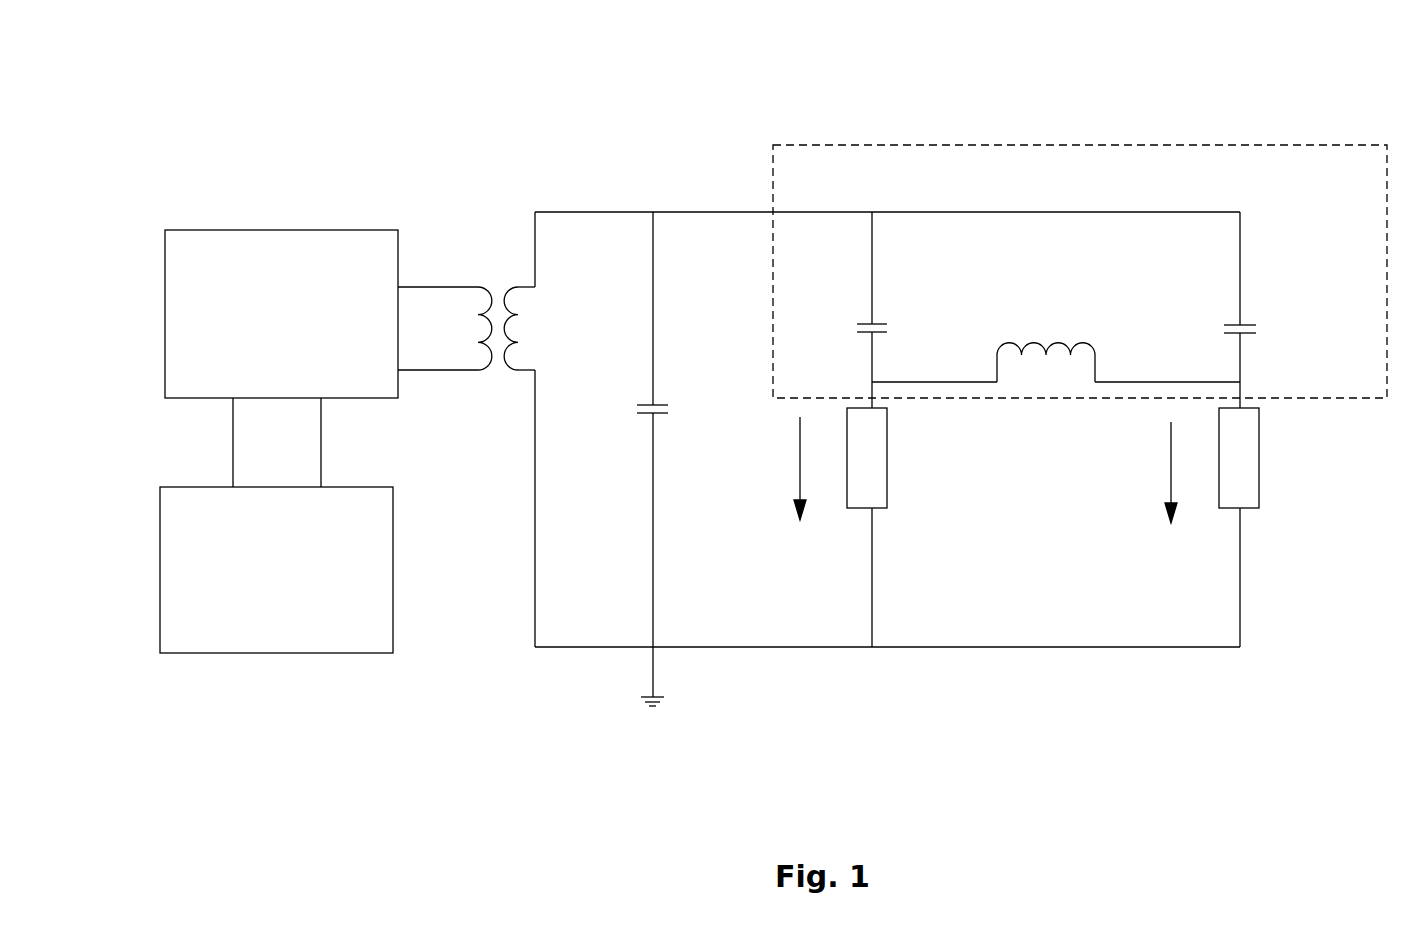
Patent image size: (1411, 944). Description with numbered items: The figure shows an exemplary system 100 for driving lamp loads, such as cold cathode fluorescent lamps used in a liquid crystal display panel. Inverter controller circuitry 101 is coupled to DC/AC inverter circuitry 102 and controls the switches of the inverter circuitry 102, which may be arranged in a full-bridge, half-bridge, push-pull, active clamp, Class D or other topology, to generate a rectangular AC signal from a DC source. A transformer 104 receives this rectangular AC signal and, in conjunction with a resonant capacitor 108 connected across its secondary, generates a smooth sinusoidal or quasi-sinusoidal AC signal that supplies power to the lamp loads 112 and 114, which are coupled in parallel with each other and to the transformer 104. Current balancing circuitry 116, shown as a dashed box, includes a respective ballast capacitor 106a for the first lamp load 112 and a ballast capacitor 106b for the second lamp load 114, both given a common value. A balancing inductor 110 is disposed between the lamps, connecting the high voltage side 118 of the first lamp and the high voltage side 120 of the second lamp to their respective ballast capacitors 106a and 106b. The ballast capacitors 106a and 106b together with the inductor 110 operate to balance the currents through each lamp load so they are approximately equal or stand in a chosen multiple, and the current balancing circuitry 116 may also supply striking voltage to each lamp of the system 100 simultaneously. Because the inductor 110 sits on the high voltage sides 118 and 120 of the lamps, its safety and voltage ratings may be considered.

The system 100 is at (715, 80).
The inverter controller circuitry 101 is at (350, 487).
The DC/AC inverter circuitry 102 is at (205, 230).
The transformer 104 is at (474, 213).
The ballast capacitor 106a is at (888, 318).
The ballast capacitor 106b is at (1255, 307).
The resonant capacitor 108 is at (658, 459).
The balancing inductor 110 is at (1056, 367).
The lamp load 112 is at (916, 527).
The lamp load 114 is at (1289, 527).
The current balancing circuitry 116 is at (1035, 145).
The high voltage side 118 is at (898, 418).
The high voltage side 120 is at (1270, 415).